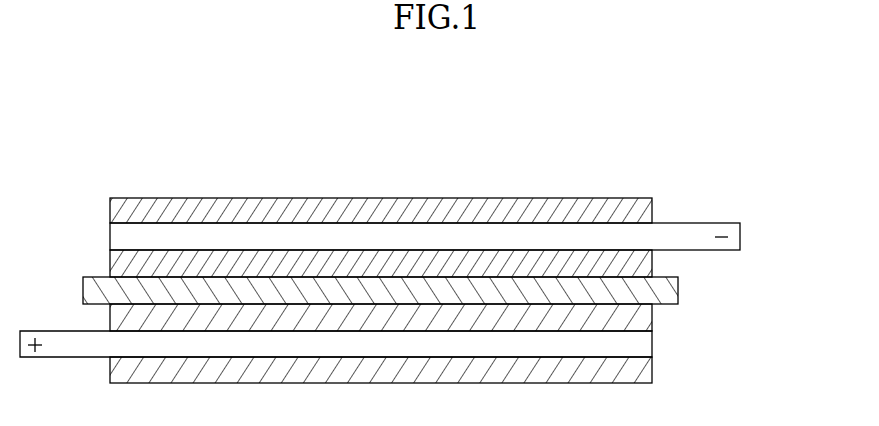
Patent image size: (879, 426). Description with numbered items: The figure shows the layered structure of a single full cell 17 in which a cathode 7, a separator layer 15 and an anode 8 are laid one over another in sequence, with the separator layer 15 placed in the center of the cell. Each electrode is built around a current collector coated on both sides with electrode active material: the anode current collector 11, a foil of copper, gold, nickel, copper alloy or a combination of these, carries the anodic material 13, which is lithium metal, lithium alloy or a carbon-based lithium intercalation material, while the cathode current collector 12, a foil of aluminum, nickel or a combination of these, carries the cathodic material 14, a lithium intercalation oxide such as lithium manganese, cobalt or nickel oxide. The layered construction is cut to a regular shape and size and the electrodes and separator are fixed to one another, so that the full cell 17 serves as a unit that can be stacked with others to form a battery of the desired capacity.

The cathode 7 is at (391, 346).
The anode 8 is at (476, 240).
The anode current collector 11 is at (458, 242).
The cathode current collector 12 is at (633, 339).
The anodic material 13 is at (652, 208).
The cathodic material 14 is at (633, 312).
The separator layer 15 is at (90, 289).
The full cell 17 is at (793, 313).